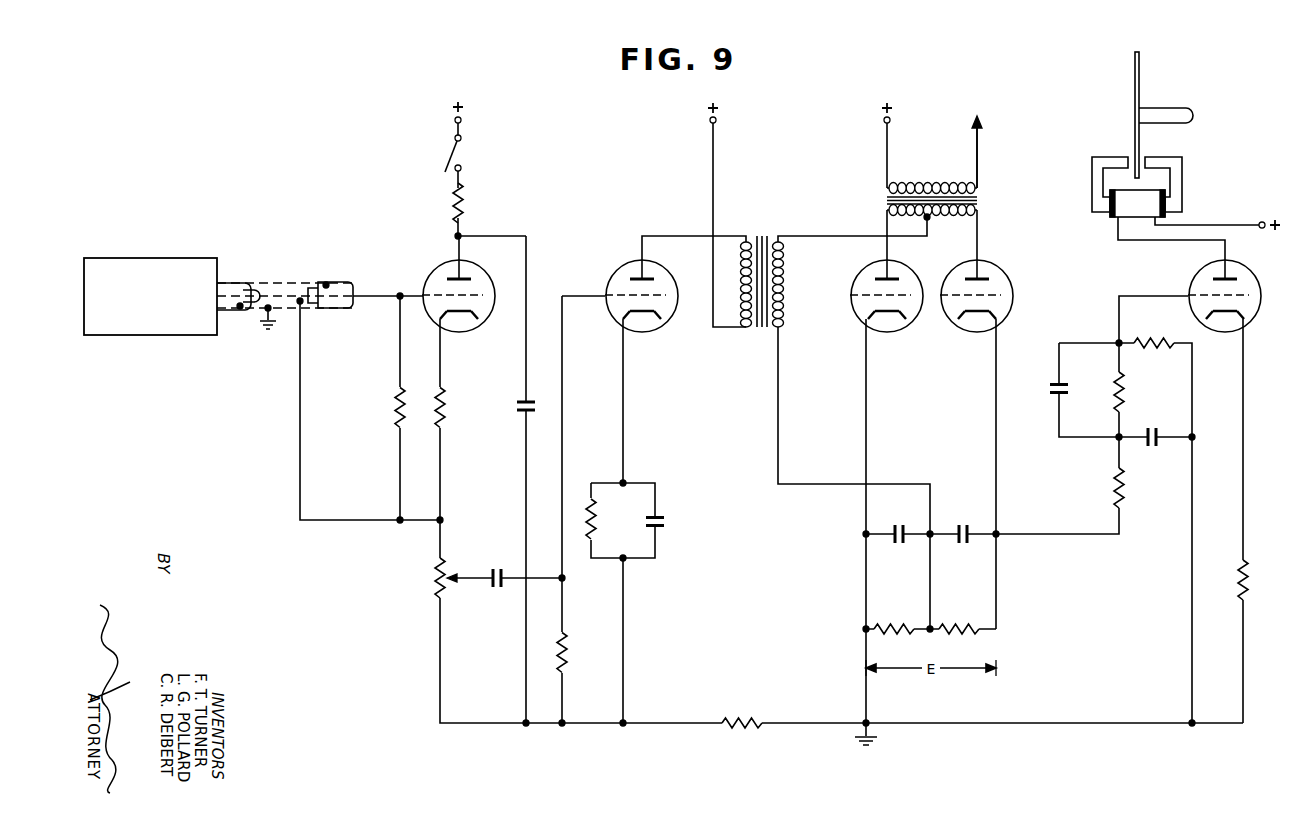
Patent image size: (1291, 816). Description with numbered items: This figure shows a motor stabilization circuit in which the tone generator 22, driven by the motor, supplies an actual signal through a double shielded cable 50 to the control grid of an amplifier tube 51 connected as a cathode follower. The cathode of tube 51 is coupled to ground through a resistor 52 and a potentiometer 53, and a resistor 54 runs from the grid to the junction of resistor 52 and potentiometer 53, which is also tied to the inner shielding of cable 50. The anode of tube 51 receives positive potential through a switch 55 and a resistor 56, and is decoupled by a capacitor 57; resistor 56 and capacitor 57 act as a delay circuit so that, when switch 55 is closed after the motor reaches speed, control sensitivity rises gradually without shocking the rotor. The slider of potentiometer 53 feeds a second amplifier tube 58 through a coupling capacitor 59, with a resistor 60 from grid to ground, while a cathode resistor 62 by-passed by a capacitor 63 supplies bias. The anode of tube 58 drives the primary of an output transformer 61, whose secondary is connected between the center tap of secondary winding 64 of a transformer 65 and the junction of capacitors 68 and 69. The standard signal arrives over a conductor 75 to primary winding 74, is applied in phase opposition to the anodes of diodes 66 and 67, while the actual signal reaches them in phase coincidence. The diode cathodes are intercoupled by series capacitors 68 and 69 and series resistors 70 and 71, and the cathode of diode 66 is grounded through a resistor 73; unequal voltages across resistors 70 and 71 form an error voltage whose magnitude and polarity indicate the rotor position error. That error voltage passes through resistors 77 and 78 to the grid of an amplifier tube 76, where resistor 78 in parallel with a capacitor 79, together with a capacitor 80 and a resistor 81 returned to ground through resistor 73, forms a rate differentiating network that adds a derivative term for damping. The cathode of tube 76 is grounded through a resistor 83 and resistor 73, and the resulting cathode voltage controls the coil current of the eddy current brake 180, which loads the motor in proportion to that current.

The tone generator 22 is at (180, 259).
The double shielded cable 50 is at (308, 322).
The amplifier tube 51 is at (480, 275).
The resistor 52 is at (446, 400).
The potentiometer 53 is at (432, 582).
The resistor 54 is at (395, 400).
The switch 55 is at (449, 162).
The resistor 56 is at (452, 205).
The capacitor 57 is at (516, 410).
The second amplifier tube 58 is at (622, 270).
The coupling capacitor 59 is at (499, 567).
The resistor 60 is at (570, 655).
The output transformer 61 is at (762, 220).
The cathode resistor 62 is at (597, 516).
The capacitor 63 is at (648, 527).
The secondary winding 64 is at (958, 216).
The transformer 65 is at (990, 199).
The diode 66 is at (864, 272).
The diode 67 is at (993, 272).
The capacitor 68 is at (900, 524).
The capacitor 69 is at (960, 524).
The resistor 70 is at (900, 620).
The resistor 71 is at (965, 620).
The resistor 73 is at (752, 718).
The primary winding 74 is at (938, 182).
The conductor 75 is at (980, 159).
The amplifier tube 76 is at (1207, 272).
The resistor 77 is at (1113, 490).
The resistor 78 is at (1113, 380).
The capacitor 79 is at (1068, 394).
The capacitor 80 is at (1158, 425).
The resistor 81 is at (1161, 348).
The resistor 83 is at (1250, 578).
The eddy current brake 180 is at (1198, 176).